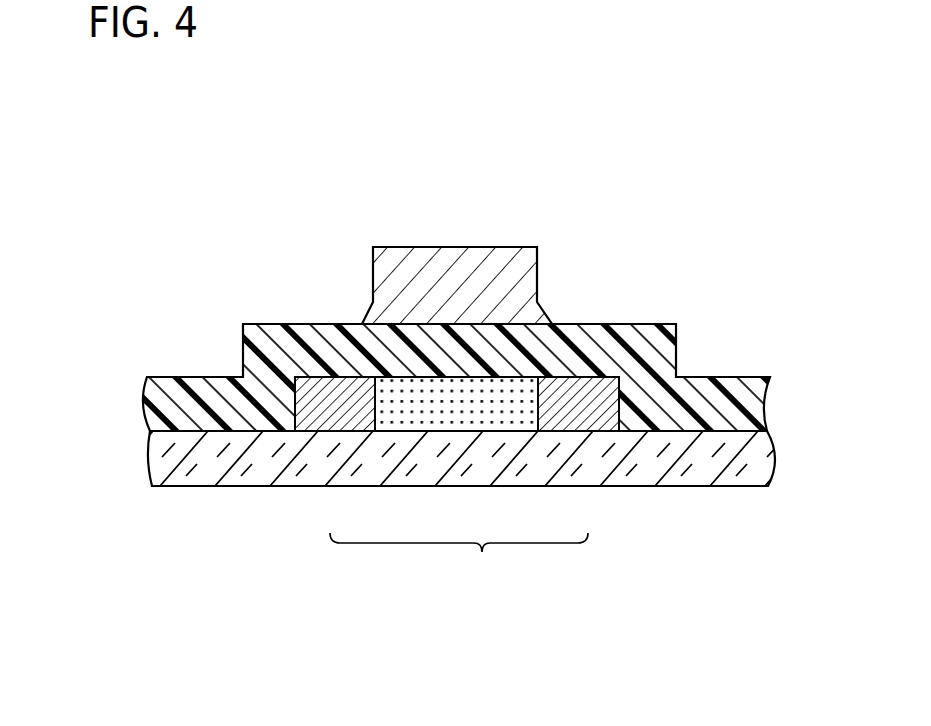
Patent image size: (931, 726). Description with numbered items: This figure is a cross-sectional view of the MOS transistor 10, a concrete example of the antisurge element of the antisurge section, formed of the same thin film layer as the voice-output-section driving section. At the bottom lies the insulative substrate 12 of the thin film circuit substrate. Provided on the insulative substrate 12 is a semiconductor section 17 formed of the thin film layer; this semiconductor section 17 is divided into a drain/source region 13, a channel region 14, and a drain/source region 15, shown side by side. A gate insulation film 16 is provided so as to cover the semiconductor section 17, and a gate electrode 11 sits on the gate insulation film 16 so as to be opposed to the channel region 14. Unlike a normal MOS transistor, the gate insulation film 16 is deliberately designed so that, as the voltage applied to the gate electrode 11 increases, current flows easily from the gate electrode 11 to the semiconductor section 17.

The MOS transistor 10 is at (270, 207).
The gate electrode 11 is at (482, 255).
The insulative substrate 12 is at (730, 478).
The drain/source region 13 is at (345, 428).
The channel region 14 is at (460, 428).
The drain/source region 15 is at (573, 428).
The gate insulation film 16 is at (623, 328).
The semiconductor section 17 is at (459, 561).